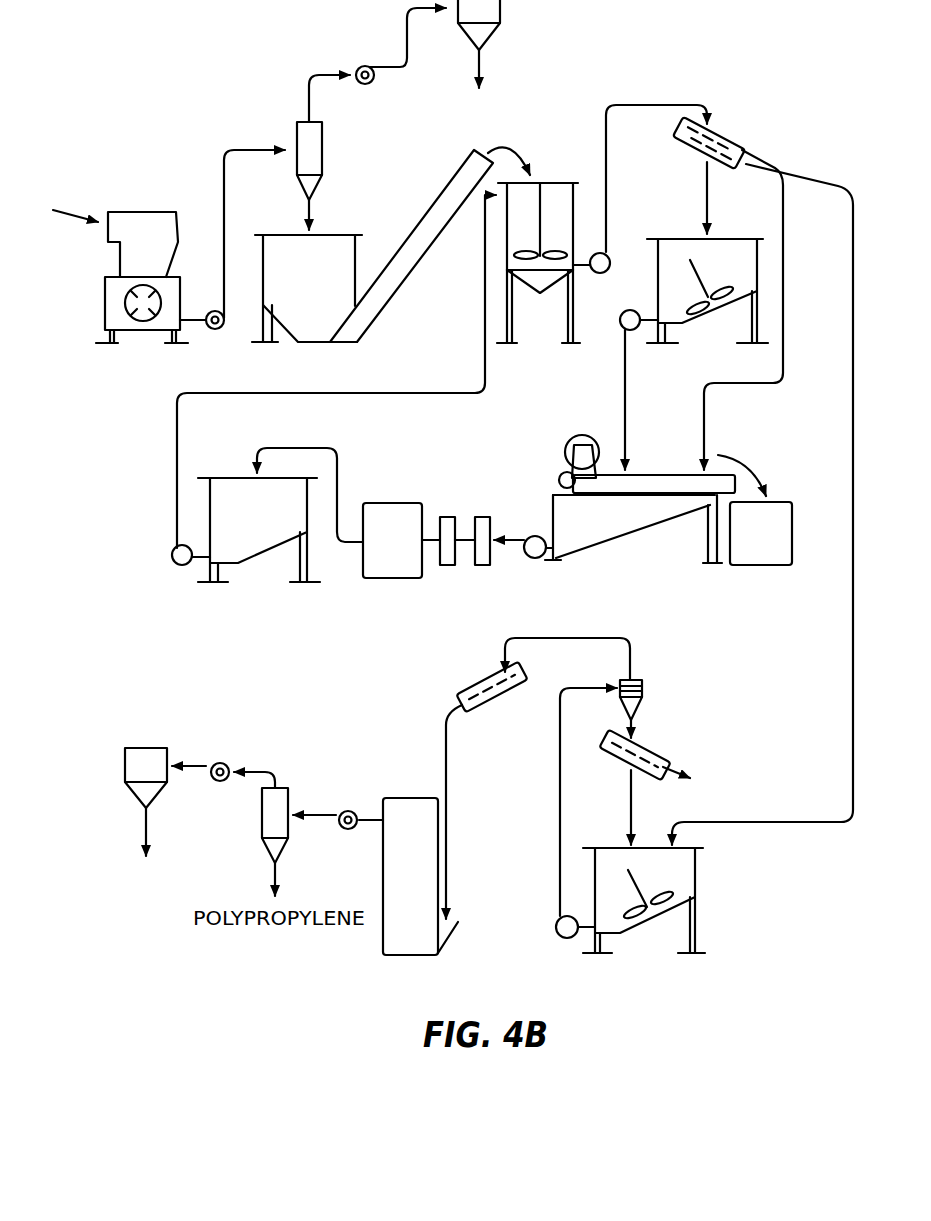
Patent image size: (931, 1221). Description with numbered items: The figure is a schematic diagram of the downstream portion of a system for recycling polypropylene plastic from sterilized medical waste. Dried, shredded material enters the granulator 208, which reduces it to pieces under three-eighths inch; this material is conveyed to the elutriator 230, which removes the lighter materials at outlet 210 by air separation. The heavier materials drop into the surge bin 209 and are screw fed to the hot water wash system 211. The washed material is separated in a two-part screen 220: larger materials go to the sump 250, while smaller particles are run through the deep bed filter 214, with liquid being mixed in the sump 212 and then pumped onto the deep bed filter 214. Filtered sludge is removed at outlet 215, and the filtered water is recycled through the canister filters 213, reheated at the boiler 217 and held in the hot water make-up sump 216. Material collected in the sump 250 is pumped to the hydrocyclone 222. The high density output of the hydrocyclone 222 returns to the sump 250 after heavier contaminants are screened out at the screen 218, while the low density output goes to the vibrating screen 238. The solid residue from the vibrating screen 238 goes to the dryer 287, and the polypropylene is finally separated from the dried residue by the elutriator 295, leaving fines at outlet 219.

The granulator 208 is at (153, 207).
The surge bin 209 is at (372, 246).
The lighter materials outlet 210 is at (493, 41).
The hot water wash system 211 is at (548, 177).
The sump 212 is at (677, 234).
The canister filters 213 is at (462, 510).
The deep bed filter 214 is at (612, 546).
The filtered sludge removal 215 is at (778, 499).
The hot water make-up sump 216 is at (236, 471).
The boiler 217 is at (383, 500).
The screen 218 is at (667, 751).
The fines outlet 219 is at (134, 795).
The two-part screen 220 is at (733, 137).
The hydrocyclone 222 is at (649, 689).
The elutriator 230 is at (324, 151).
The vibrating screen 238 is at (485, 679).
The sump 250 is at (703, 880).
The dryer 287 is at (400, 794).
The elutriator 295 is at (262, 821).